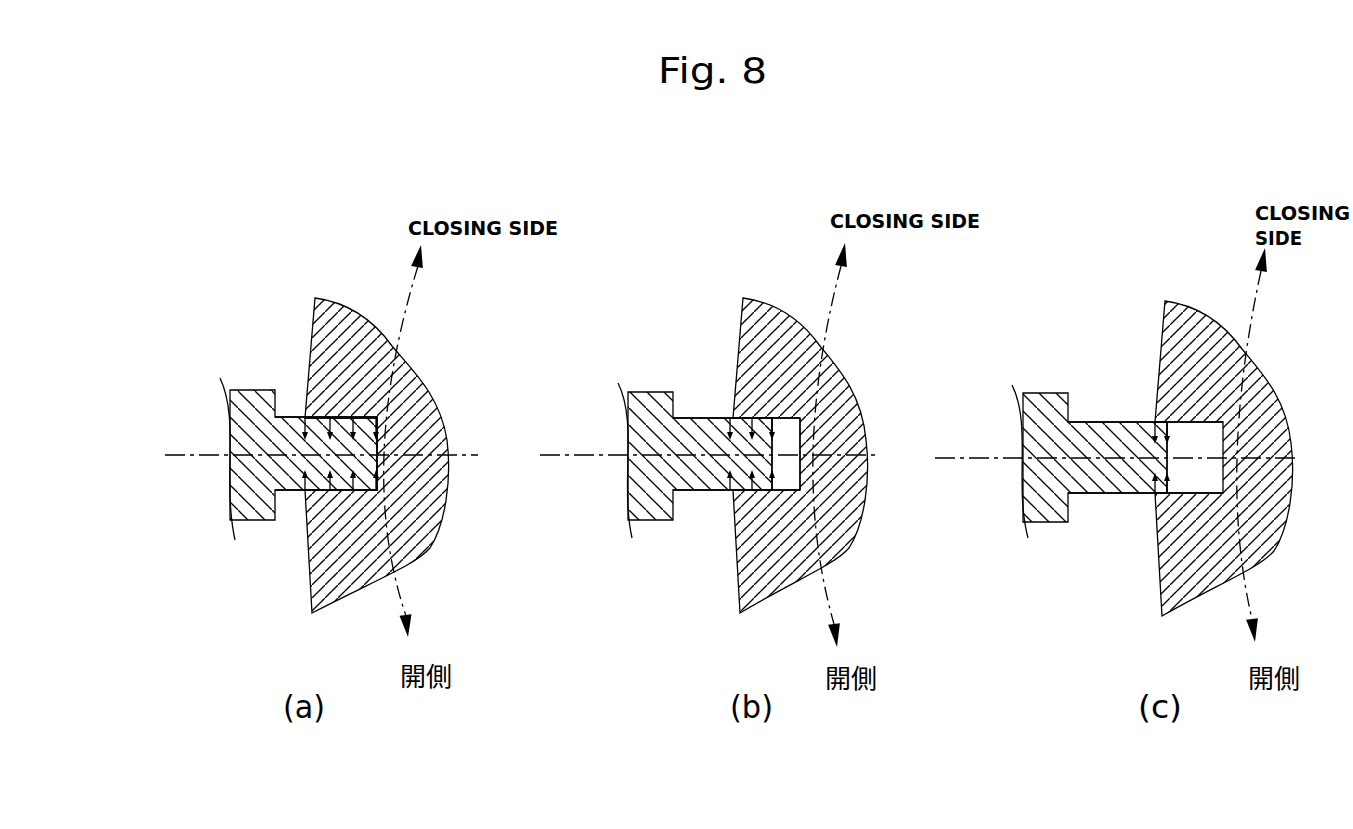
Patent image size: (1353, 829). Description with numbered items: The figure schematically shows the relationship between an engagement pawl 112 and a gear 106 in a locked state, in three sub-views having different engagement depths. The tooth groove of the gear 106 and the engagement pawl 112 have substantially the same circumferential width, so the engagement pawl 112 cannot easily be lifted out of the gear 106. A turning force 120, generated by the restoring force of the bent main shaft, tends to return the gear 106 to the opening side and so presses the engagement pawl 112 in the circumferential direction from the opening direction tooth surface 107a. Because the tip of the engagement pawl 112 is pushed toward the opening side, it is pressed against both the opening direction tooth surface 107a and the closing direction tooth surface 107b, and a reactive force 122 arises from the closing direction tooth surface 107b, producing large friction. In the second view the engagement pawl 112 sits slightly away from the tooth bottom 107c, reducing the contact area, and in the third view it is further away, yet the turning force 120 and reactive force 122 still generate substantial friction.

The gear 106 is at (422, 493).
The opening direction tooth surface 107a is at (368, 424).
The closing direction tooth surface 107b is at (362, 490).
The tooth bottom 107c is at (792, 452).
The engagement pawl 112 is at (253, 397).
The turning force 120 is at (297, 415).
The reactive force 122 is at (300, 488).